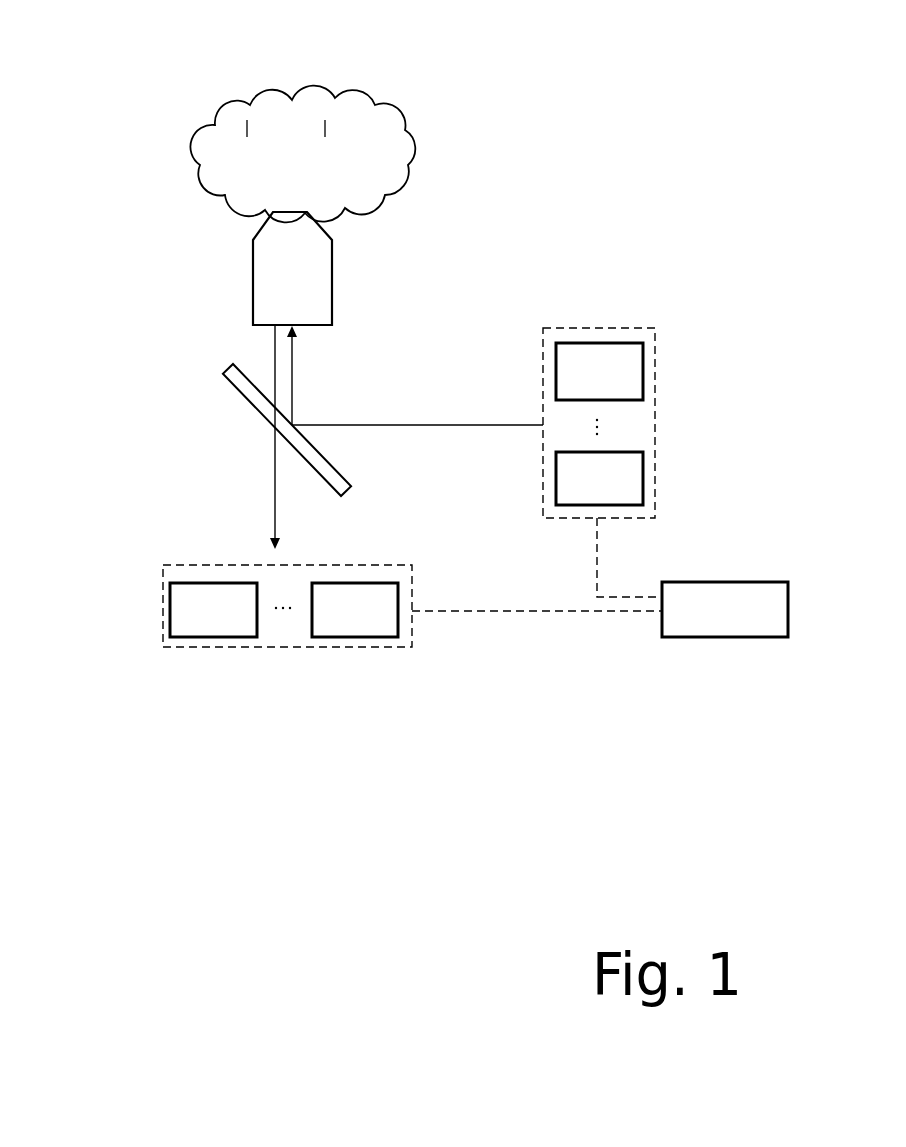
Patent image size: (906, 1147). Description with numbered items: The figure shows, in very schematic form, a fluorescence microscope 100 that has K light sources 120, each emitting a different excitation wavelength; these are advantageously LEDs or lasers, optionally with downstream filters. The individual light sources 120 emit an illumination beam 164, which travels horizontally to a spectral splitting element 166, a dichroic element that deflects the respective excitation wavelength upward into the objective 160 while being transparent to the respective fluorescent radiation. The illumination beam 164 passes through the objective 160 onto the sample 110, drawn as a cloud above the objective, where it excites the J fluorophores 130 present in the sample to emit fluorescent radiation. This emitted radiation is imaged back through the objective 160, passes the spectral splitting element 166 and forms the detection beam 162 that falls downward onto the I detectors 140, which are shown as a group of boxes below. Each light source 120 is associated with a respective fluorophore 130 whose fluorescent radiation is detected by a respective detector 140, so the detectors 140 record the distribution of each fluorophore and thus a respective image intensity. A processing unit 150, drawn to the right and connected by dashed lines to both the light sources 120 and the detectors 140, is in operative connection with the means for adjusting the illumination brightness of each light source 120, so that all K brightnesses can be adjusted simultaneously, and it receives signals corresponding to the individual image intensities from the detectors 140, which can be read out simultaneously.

The fluorescence microscope 100 is at (145, 193).
The sample 110 is at (402, 123).
The light sources 120 is at (633, 360).
The fluorophores 130 is at (325, 137).
The detectors 140 is at (238, 637).
The processing unit 150 is at (740, 627).
The objective 160 is at (318, 262).
The detection beam 162 is at (270, 503).
The illumination beam 164 is at (482, 422).
The spectral splitting element 166 is at (237, 393).